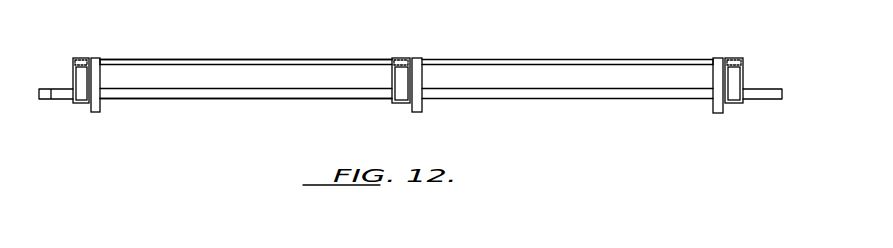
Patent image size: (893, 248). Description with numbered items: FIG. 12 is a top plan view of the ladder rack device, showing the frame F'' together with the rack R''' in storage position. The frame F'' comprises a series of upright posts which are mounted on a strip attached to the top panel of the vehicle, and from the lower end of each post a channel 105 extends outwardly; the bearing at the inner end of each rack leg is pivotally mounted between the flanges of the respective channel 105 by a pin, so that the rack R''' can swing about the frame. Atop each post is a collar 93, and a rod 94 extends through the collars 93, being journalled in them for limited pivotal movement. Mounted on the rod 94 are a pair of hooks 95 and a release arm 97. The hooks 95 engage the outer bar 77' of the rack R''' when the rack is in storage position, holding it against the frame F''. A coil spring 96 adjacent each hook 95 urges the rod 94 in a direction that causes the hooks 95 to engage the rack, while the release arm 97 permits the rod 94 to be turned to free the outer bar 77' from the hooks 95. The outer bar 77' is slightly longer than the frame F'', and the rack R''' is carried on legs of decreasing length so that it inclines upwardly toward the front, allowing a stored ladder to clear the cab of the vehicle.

The collar 93 is at (83, 57).
The rod 94 is at (577, 61).
The hook 95 is at (101, 75).
The coil spring 96 is at (94, 58).
The release arm 97 is at (422, 77).
The channel 105 is at (73, 75).
The outer bar 77' is at (410, 111).
The frame F'' is at (246, 43).
The rack R''' is at (246, 117).